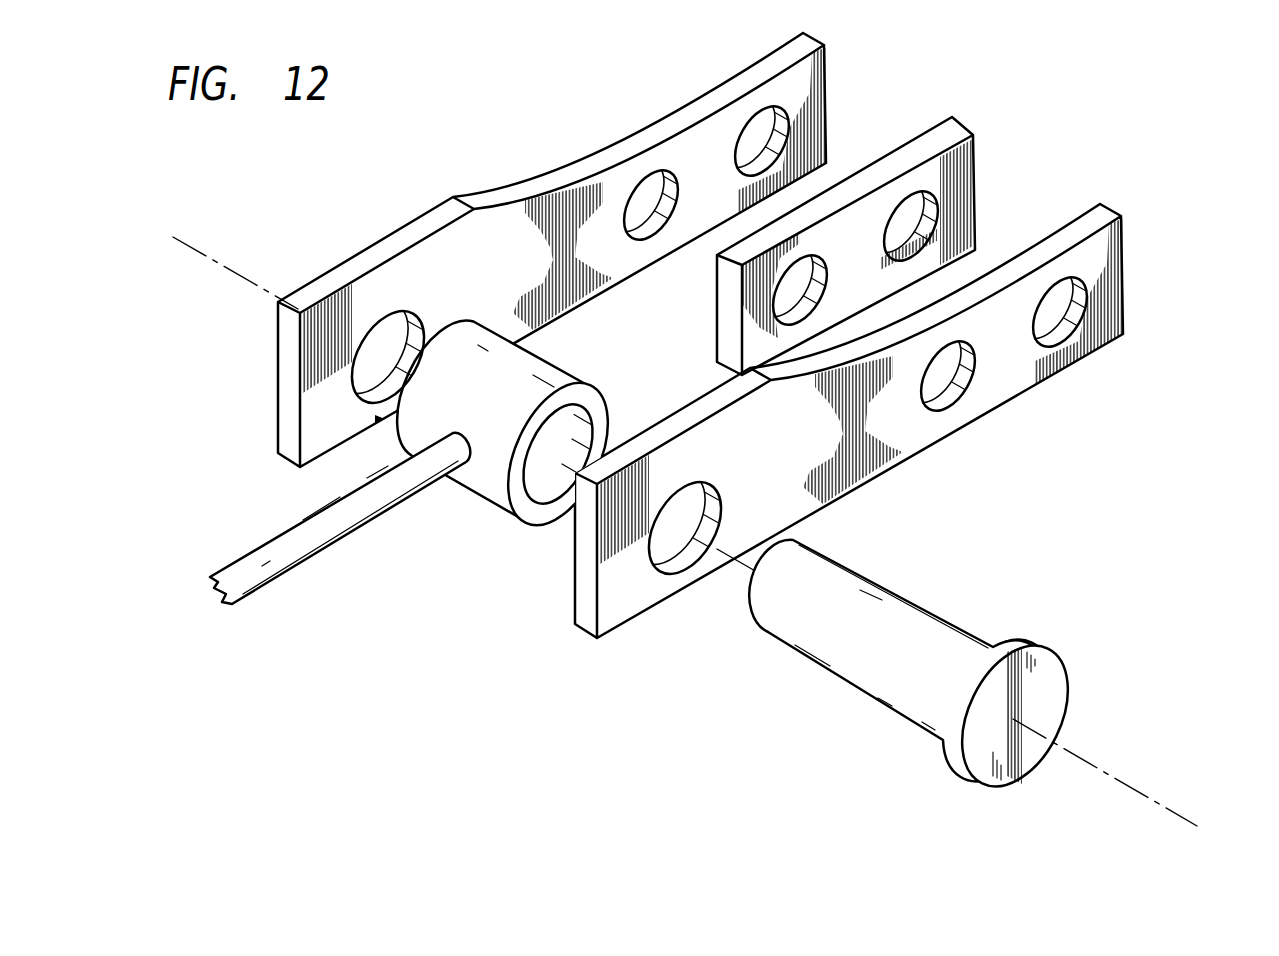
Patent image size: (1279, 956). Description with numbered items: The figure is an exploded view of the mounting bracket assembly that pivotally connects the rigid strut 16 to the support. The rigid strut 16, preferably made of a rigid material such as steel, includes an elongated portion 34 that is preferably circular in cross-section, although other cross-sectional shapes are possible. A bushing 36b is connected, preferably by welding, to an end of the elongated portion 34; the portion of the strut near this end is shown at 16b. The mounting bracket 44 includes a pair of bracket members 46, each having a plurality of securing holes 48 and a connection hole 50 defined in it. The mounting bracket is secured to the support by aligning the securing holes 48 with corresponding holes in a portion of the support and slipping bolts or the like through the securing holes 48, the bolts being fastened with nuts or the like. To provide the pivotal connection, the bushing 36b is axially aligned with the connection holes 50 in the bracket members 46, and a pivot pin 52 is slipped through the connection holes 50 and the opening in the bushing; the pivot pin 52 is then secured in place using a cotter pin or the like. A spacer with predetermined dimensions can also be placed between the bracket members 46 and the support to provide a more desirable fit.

The rigid strut 16 is at (303, 547).
The rod end portion 16b is at (376, 419).
The elongated portion 34 is at (367, 502).
The bushing 36b is at (523, 503).
The mounting bracket 44 is at (1190, 353).
The bracket members 46 is at (808, 87).
The securing holes 48 is at (650, 200).
The connection hole 50 is at (387, 358).
The pivot pin 52 is at (1037, 693).